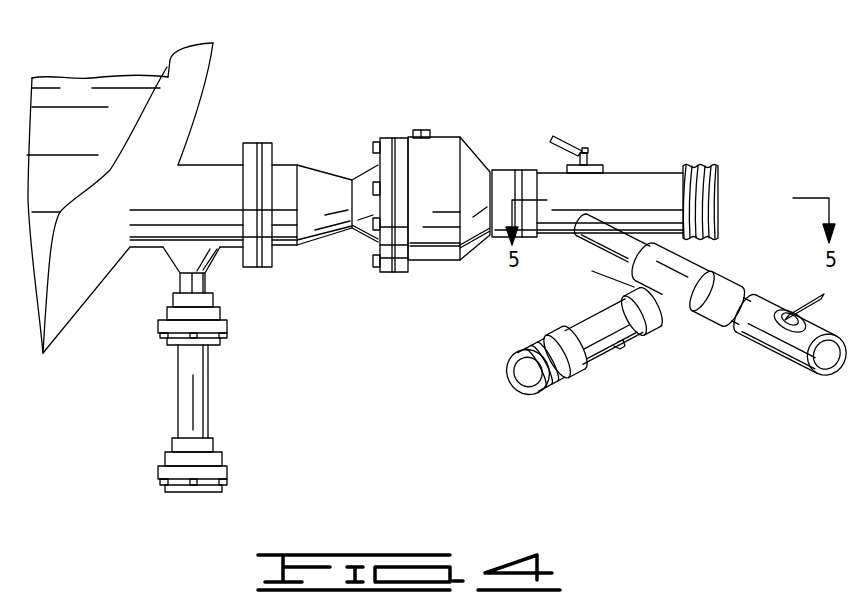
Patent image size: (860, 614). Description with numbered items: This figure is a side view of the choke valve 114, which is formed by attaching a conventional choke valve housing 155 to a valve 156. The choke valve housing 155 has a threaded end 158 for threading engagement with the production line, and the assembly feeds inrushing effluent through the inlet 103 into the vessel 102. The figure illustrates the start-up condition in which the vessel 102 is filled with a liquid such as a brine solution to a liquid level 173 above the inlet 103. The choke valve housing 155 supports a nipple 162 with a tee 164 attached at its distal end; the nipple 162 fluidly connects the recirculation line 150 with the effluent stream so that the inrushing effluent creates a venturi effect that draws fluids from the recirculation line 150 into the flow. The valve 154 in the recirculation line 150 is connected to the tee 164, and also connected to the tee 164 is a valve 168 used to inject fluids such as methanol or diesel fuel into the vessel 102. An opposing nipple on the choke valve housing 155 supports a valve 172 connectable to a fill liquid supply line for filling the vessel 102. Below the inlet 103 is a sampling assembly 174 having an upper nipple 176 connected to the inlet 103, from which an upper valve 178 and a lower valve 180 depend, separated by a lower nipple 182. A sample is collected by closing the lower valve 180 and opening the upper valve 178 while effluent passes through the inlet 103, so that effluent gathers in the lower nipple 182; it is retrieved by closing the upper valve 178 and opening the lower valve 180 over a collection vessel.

The vessel 102 is at (80, 313).
The inlet 103 is at (213, 165).
The choke valve 114 is at (570, 145).
The recirculation line 150 is at (552, 338).
The valve 154 is at (604, 349).
The choke valve housing 155 is at (643, 173).
The valve 156 is at (403, 137).
The threaded end 158 is at (720, 188).
The nipple 162 is at (609, 260).
The tee 164 is at (697, 277).
The valve 168 is at (752, 343).
The valve 172 is at (602, 165).
The liquid level 173 is at (125, 76).
The sampling assembly 174 is at (210, 369).
The upper nipple 176 is at (208, 283).
The upper valve 178 is at (227, 329).
The lower valve 180 is at (227, 468).
The lower nipple 182 is at (178, 393).